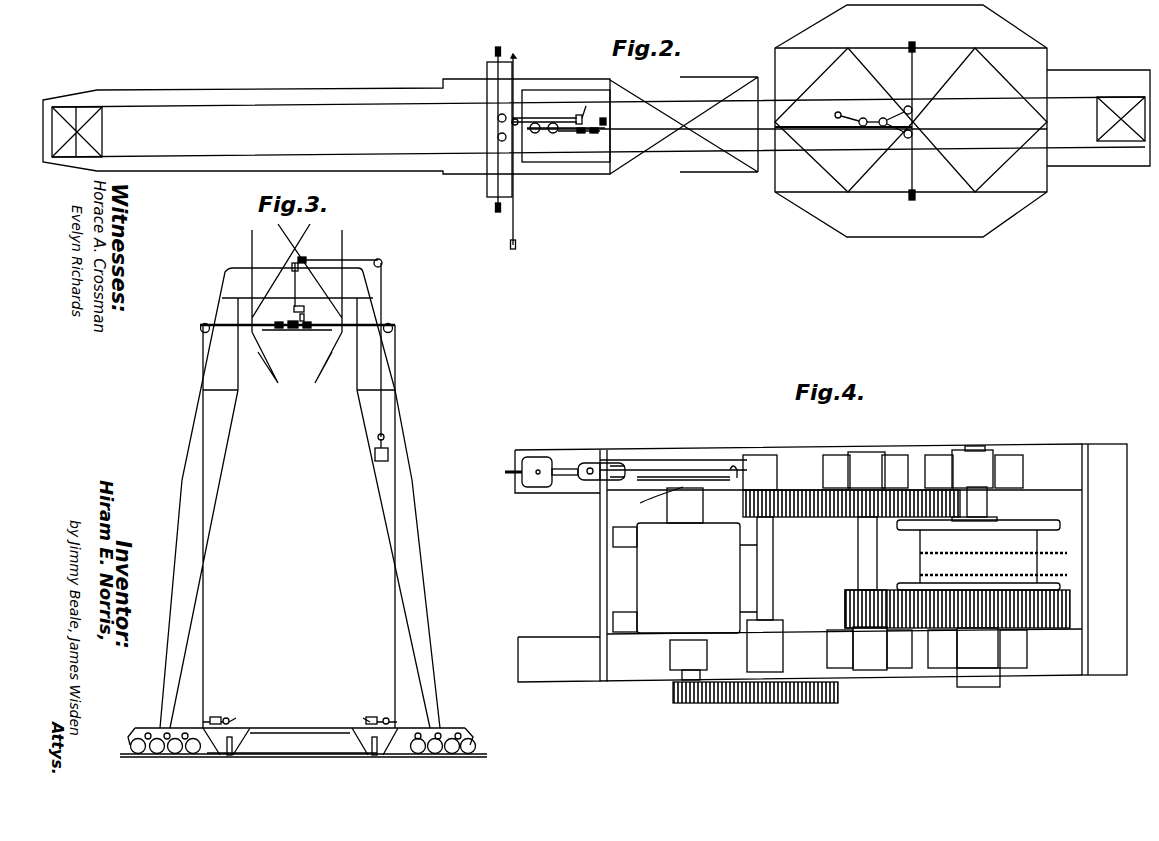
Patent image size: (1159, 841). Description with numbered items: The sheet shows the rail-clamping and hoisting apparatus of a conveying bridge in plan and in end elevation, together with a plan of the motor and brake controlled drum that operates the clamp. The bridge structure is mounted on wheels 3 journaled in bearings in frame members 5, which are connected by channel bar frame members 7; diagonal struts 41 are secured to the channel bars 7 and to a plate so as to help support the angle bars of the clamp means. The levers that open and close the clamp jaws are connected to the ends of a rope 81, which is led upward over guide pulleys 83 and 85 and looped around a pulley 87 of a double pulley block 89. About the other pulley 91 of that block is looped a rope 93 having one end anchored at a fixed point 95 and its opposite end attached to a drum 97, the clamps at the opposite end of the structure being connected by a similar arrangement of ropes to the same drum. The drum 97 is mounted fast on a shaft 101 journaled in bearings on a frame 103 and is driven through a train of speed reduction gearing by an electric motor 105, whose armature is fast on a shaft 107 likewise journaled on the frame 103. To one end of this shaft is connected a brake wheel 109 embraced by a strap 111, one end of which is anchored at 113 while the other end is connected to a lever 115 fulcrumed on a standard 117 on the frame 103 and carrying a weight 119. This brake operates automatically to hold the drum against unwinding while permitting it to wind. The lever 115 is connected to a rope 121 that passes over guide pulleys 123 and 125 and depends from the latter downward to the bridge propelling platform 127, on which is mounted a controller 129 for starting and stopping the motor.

In FIG. 3, the wheels 3 is at (193, 751).
In FIG. 3, the frame members 5 is at (158, 728).
In FIG. 3, the channel bar frame members 7 is at (292, 730).
In FIG. 3, the diagonal struts 41 is at (215, 748).
In FIG. 3, the rope 81 is at (396, 656).
In FIG. 2, the guide pulley 83 is at (498, 50).
In FIG. 3, the guide pulley 83 is at (201, 326).
In FIG. 2, the guide pulley 85 is at (498, 136).
In FIG. 2, the pulley 87 is at (538, 135).
In FIG. 2, the double pulley block 89 is at (554, 134).
In FIG. 2, the pulley 91 is at (565, 134).
In FIG. 2, the rope 93 is at (607, 120).
In FIG. 2, the fixed point 95 is at (600, 132).
In FIG. 2, the drum 97 is at (588, 119).
In FIG. 4, the drum 97 is at (920, 553).
In FIG. 4, the shaft 101 is at (988, 500).
In FIG. 4, the frame 103 is at (1033, 447).
In FIG. 4, the electric motor 105 is at (647, 575).
In FIG. 4, the shaft 107 is at (640, 503).
In FIG. 4, the brake wheel 109 is at (665, 460).
In FIG. 4, the strap 111 is at (697, 468).
In FIG. 4, the anchor point 113 is at (737, 463).
In FIG. 2, the lever 115 is at (578, 115).
In FIG. 4, the lever 115 is at (567, 468).
In FIG. 4, the standard 117 is at (603, 466).
In FIG. 4, the weight 119 is at (532, 462).
In FIG. 2, the rope 121 is at (537, 118).
In FIG. 3, the rope 121 is at (383, 369).
In FIG. 2, the guide pulley 123 is at (514, 118).
In FIG. 2, the guide pulley 125 is at (518, 245).
In FIG. 3, the guide pulley 125 is at (383, 264).
In FIG. 3, the bridge propelling platform 127 is at (390, 458).
In FIG. 3, the controller 129 is at (386, 441).